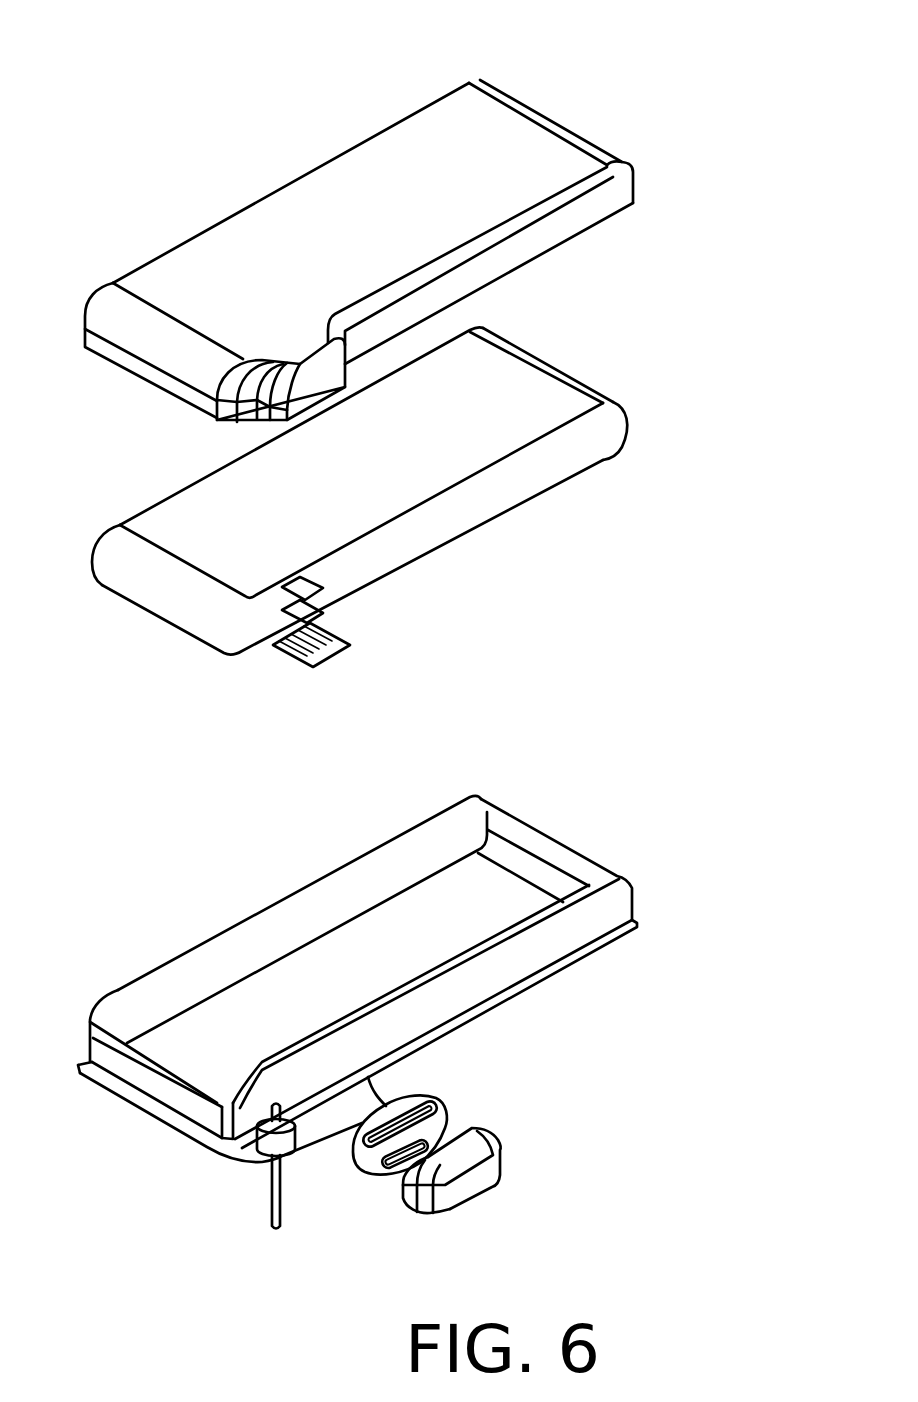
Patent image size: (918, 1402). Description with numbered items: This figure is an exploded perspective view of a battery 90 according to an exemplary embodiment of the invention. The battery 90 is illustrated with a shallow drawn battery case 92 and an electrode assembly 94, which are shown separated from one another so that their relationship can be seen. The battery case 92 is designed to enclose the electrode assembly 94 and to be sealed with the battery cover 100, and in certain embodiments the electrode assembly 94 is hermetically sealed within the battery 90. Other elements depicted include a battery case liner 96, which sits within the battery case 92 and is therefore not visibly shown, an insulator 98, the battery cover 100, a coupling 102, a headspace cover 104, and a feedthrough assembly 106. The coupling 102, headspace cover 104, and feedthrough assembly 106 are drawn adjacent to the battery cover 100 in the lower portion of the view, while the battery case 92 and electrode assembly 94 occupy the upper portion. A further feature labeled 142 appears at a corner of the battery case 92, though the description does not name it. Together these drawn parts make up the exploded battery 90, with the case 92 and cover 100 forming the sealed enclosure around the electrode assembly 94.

The battery 90 is at (682, 90).
The battery case 92 is at (432, 213).
The electrode assembly 94 is at (487, 482).
The battery case liner 96 is at (574, 296).
The insulator 98 is at (608, 918).
The battery cover 100 is at (343, 1097).
The coupling 102 is at (448, 1113).
The headspace cover 104 is at (462, 1182).
The feedthrough assembly 106 is at (270, 1140).
The hinge bump 142 is at (298, 345).